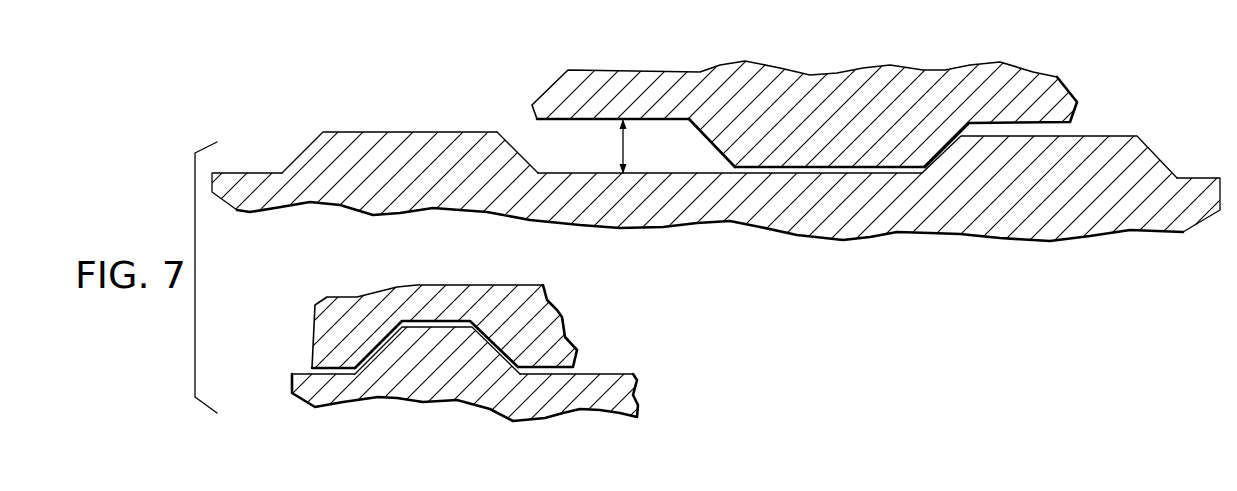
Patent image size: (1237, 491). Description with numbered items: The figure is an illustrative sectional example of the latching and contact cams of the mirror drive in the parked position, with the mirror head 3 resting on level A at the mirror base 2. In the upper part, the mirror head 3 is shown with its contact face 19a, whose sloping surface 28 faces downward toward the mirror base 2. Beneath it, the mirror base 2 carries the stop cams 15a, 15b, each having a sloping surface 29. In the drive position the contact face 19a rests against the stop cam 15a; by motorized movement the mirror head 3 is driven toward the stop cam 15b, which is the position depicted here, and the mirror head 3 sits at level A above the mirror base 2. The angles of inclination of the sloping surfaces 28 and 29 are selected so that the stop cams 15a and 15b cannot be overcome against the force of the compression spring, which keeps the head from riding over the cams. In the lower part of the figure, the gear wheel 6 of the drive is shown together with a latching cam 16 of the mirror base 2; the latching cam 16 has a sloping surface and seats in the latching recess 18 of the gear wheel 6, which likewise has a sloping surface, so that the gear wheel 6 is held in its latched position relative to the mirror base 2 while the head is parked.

The mirror base 2 is at (633, 407).
The mirror head 3 is at (1033, 88).
The gear wheel 6 is at (555, 333).
The stop cam 15a is at (435, 147).
The stop cam 15b is at (1141, 165).
The latching cam 16 is at (433, 380).
The latching recess 18 is at (448, 323).
The contact face 19a is at (722, 140).
The sloping surface 28 is at (708, 146).
The sloping surface 29 is at (518, 157).
The level A is at (632, 146).